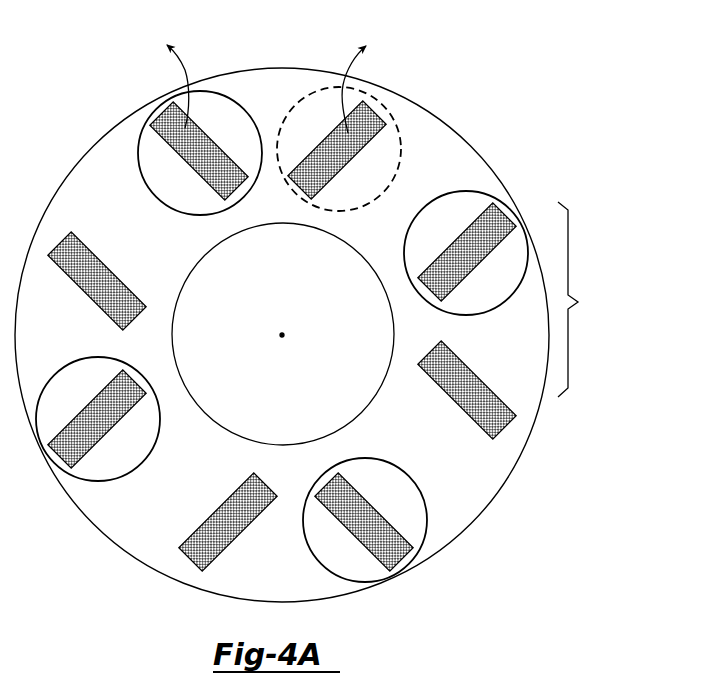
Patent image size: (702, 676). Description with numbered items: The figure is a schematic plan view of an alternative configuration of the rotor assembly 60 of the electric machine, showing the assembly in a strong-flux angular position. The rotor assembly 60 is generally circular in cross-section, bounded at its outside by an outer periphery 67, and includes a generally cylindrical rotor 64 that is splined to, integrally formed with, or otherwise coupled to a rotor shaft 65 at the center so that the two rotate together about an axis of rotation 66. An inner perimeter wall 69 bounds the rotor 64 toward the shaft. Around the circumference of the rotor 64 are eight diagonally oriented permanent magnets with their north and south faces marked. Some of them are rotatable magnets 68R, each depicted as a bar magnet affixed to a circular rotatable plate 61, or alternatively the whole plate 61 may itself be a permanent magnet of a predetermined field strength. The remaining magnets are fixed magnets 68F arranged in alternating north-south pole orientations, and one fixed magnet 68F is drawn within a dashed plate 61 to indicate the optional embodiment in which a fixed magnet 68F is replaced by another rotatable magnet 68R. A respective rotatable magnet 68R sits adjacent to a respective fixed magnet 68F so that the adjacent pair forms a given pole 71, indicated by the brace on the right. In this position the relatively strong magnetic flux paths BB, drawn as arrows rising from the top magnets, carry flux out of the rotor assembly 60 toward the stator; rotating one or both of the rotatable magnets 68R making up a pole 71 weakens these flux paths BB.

The rotor assembly 60 is at (488, 103).
The rotatable plate 61 is at (137, 163).
The rotor 64 is at (513, 330).
The rotor shaft 65 is at (270, 291).
The axis of rotation 66 is at (282, 338).
The outer periphery 67 is at (468, 528).
The rotatable magnets 68R is at (252, 107).
The fixed magnets 68F is at (373, 137).
The inner perimeter wall 69 is at (347, 420).
The pole 71 is at (584, 299).
The flux paths BB is at (355, 67).